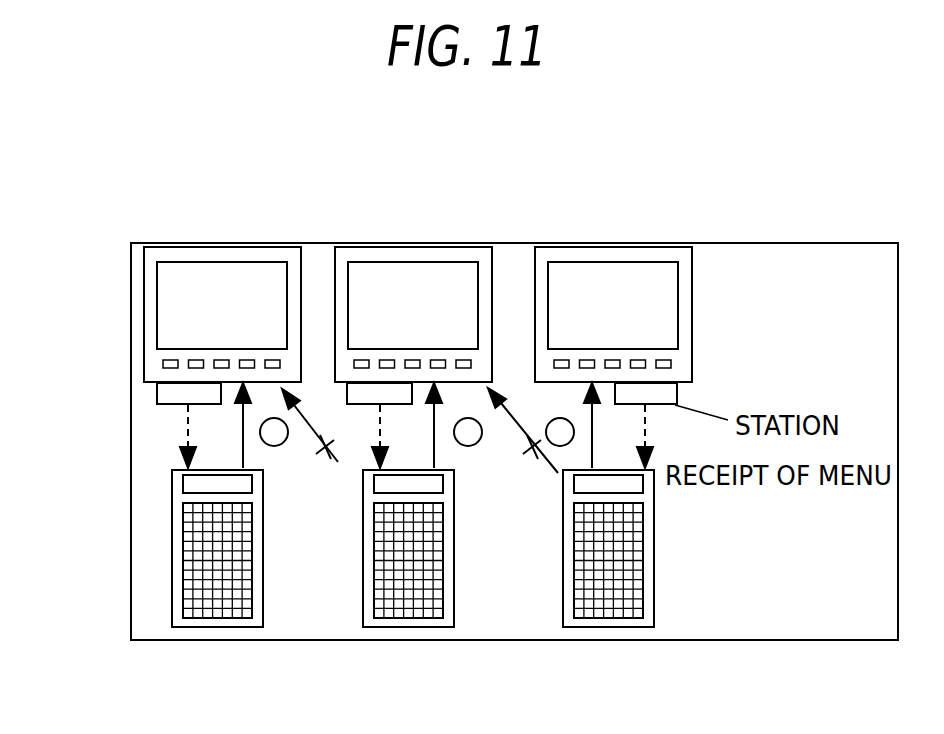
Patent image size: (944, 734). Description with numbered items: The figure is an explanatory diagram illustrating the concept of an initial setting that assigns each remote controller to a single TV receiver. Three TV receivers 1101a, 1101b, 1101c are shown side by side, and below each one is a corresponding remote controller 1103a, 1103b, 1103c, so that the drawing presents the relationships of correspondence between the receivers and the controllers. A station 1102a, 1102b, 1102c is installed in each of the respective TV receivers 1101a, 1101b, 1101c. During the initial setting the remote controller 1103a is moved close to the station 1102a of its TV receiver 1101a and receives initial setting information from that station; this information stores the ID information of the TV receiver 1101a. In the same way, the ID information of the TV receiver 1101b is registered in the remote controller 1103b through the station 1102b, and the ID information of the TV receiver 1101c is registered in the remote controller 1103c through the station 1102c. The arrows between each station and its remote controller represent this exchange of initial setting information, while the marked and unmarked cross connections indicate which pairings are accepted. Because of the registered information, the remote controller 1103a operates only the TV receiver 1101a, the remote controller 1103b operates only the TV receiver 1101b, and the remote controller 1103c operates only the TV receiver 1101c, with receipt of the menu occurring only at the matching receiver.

The TV receiver 1101a is at (195, 249).
The TV receiver 1101b is at (445, 250).
The TV receiver 1101c is at (643, 250).
The station 1102a is at (157, 390).
The station 1102b is at (375, 382).
The station 1102c is at (677, 393).
The remote controller 1103a is at (217, 627).
The remote controller 1103b is at (403, 627).
The remote controller 1103c is at (600, 627).